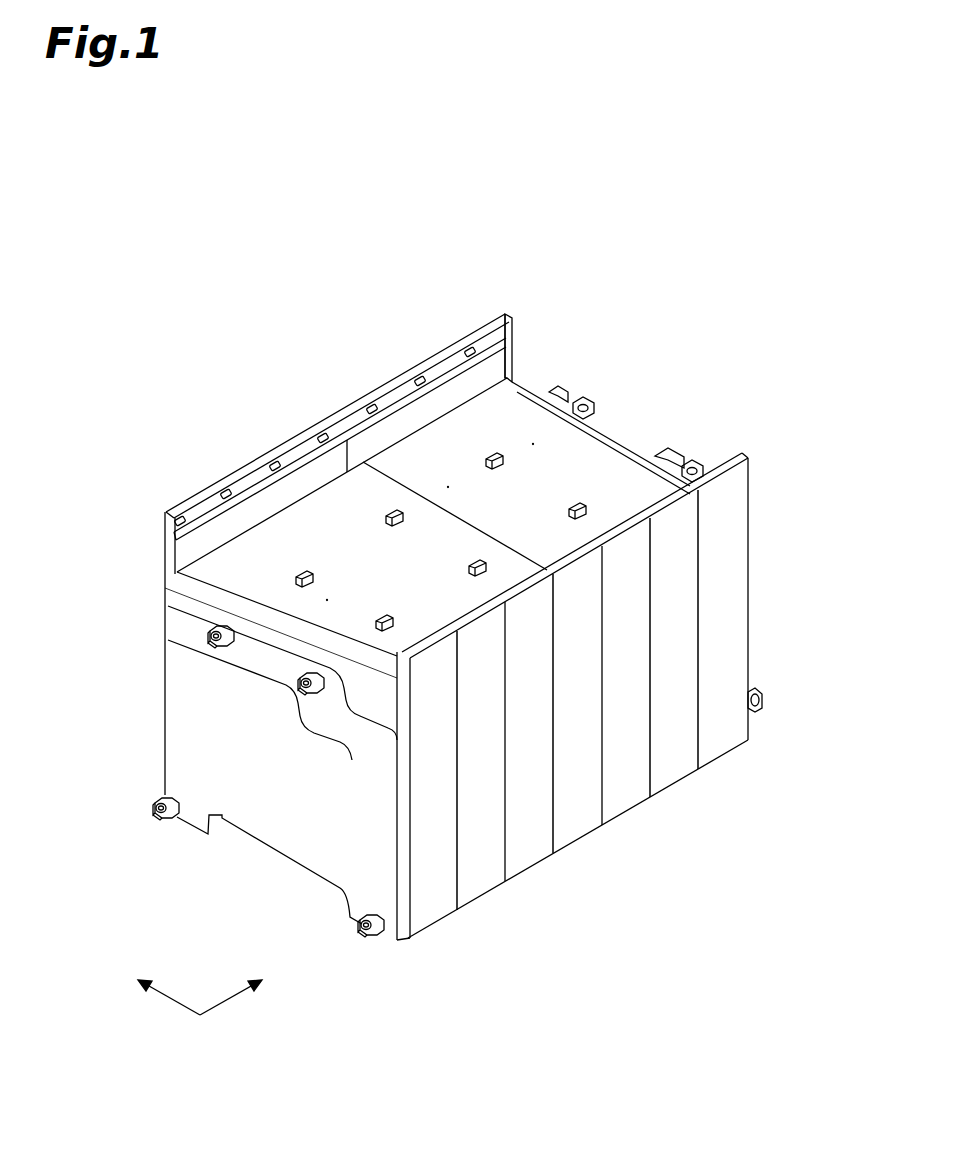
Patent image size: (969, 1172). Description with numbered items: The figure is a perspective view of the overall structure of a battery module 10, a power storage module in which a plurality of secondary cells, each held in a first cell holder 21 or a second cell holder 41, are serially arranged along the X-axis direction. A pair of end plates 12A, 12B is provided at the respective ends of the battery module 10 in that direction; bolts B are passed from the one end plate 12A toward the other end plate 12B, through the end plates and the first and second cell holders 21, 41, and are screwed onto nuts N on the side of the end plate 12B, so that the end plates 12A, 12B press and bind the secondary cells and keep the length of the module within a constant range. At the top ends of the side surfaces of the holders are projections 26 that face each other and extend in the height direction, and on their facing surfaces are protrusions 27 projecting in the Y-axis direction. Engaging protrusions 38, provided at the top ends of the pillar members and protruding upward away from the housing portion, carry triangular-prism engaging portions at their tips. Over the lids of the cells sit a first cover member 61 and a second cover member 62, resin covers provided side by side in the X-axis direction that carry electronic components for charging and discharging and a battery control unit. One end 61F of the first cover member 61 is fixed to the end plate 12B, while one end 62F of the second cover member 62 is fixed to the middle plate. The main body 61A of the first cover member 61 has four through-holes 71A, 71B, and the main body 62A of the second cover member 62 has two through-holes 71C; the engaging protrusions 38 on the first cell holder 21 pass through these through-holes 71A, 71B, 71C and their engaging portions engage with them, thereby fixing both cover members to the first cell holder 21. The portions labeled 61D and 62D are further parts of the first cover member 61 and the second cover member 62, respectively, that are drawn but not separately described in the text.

The battery module 10 is at (90, 397).
The end plate 12A is at (750, 565).
The end plate 12B is at (264, 845).
The first cell holder 21 is at (487, 900).
The second cell holder 41 is at (442, 922).
The projection 26 is at (245, 468).
The protrusion 27 is at (178, 522).
The engaging protrusion 38 is at (390, 516).
The first cover member 61 is at (318, 500).
The main body of the first cover member 61A is at (377, 666).
The frame side portion 61D is at (192, 546).
The one end of the first cover member 61F is at (271, 652).
The second cover member 62 is at (418, 453).
The main body of the second cover member 62A is at (525, 398).
The flange of holding member 62D is at (487, 370).
The one end of the second cover member 62F is at (635, 446).
The through-hole 71A is at (303, 578).
The through-hole 71B is at (484, 560).
The through-hole 71C is at (503, 460).
The nut N is at (229, 648).
The bolt B is at (593, 403).